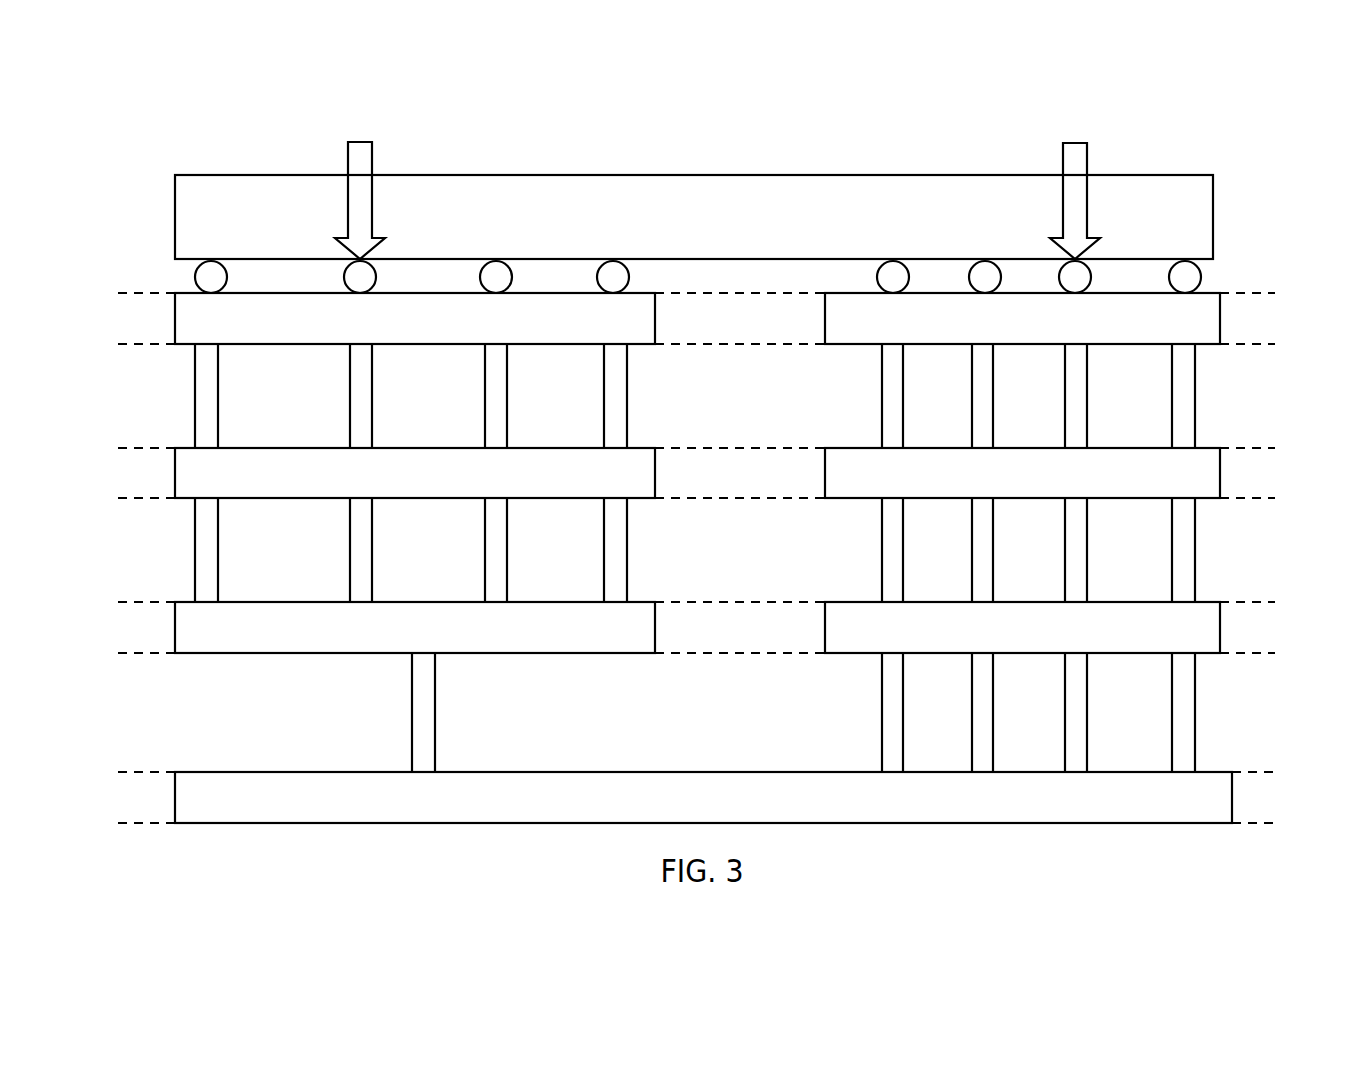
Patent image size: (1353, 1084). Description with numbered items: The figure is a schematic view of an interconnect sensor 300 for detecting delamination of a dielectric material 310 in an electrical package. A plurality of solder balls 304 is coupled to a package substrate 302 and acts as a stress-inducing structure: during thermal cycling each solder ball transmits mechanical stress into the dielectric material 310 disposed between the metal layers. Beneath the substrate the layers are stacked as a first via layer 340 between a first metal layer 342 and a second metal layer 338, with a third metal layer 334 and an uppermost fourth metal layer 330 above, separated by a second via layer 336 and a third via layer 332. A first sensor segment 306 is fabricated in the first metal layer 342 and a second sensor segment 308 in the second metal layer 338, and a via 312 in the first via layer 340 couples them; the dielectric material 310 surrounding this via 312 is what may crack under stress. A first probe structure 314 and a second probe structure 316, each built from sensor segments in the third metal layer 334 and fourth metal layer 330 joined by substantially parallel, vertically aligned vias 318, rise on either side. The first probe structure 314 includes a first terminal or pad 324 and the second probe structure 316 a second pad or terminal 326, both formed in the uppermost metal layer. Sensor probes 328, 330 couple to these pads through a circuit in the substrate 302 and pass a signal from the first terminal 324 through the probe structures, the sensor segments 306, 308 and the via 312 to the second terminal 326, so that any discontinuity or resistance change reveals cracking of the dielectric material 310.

The sensor 300 is at (118, 193).
The package substrate 302 is at (428, 179).
The solder balls 304 is at (630, 276).
The first sensor segment 306 is at (270, 825).
The second sensor segment 308 is at (411, 634).
The dielectric material 310 is at (265, 412).
The via 312 is at (412, 720).
The first probe structure 314 is at (102, 277).
The second probe structure 316 is at (1304, 266).
The vias 318 is at (206, 436).
The first terminal or pad 324 is at (194, 302).
The second pad or terminal 326 is at (1205, 306).
The sensor probe 328 is at (354, 164).
The fourth metal layer 330 is at (1076, 169).
The third via layer 332 is at (113, 357).
The third metal layer 334 is at (113, 448).
The second via layer 336 is at (113, 512).
The second metal layer 338 is at (113, 602).
The first via layer 340 is at (113, 672).
The first metal layer 342 is at (113, 772).